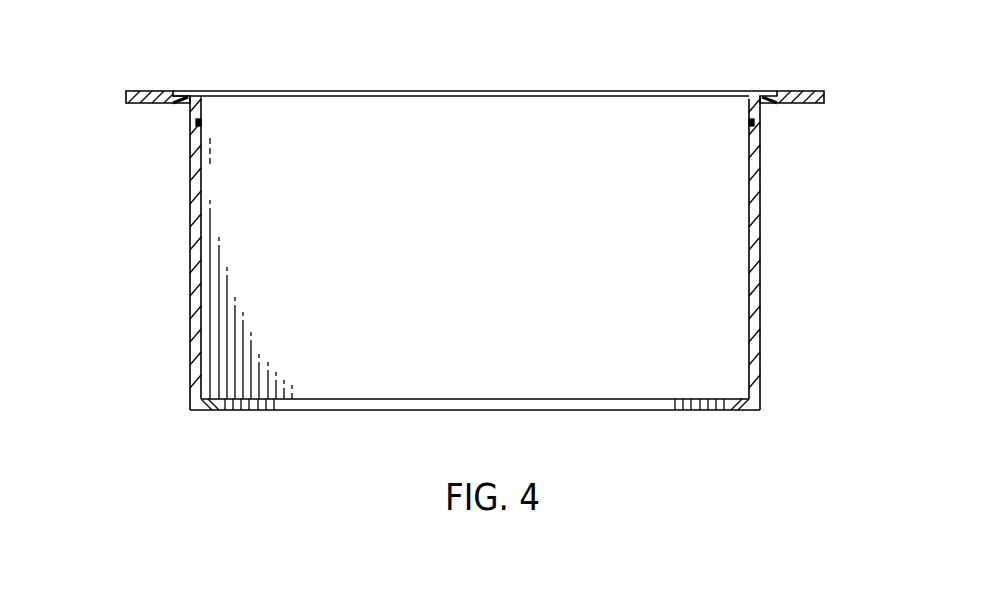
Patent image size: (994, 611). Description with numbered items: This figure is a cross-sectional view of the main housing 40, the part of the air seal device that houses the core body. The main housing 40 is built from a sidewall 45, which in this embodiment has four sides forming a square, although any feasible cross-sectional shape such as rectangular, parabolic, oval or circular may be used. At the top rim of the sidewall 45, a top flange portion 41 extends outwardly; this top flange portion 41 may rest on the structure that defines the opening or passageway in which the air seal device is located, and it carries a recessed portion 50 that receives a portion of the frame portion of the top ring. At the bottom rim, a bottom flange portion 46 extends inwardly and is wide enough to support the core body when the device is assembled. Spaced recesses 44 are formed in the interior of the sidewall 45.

The main housing 40 is at (785, 197).
The top flange portion 41 is at (130, 91).
The recesses 44 is at (202, 122).
The sidewall 45 is at (190, 249).
The bottom flange portion 46 is at (210, 406).
The recessed portion 50 is at (755, 95).